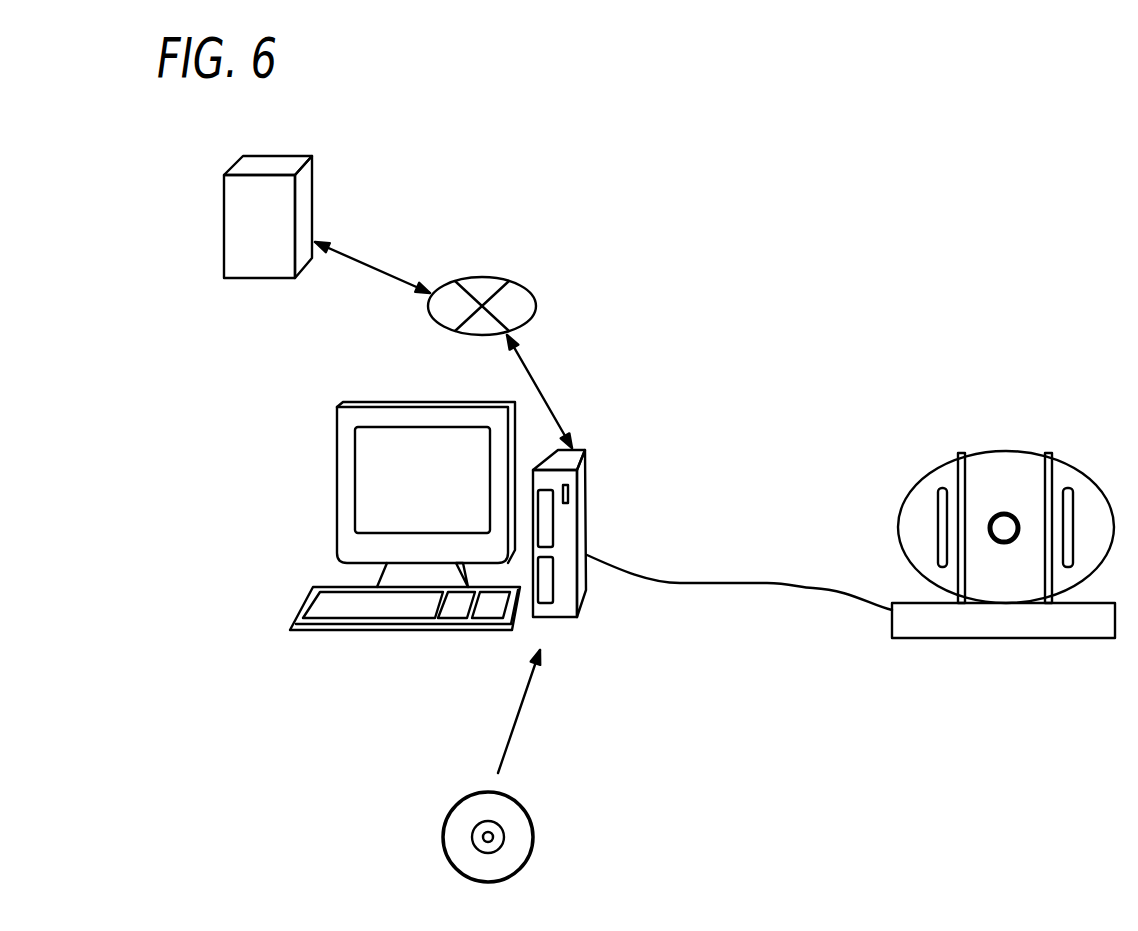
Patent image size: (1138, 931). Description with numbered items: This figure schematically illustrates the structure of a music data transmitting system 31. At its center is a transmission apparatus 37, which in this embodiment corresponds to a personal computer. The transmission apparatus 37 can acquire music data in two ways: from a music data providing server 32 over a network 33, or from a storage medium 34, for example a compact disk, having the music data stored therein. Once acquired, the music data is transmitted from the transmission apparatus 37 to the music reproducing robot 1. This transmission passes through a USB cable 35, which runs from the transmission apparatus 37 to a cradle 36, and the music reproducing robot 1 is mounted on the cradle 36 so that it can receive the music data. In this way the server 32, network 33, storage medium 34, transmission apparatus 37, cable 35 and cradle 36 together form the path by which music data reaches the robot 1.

The music reproducing robot 1 is at (1017, 450).
The music data transmitting system 31 is at (865, 295).
The music data providing server 32 is at (312, 208).
The network 33 is at (537, 305).
The storage medium 34 is at (535, 833).
The USB cable 35 is at (713, 583).
The cradle 36 is at (1000, 638).
The transmission apparatus 37 is at (598, 469).